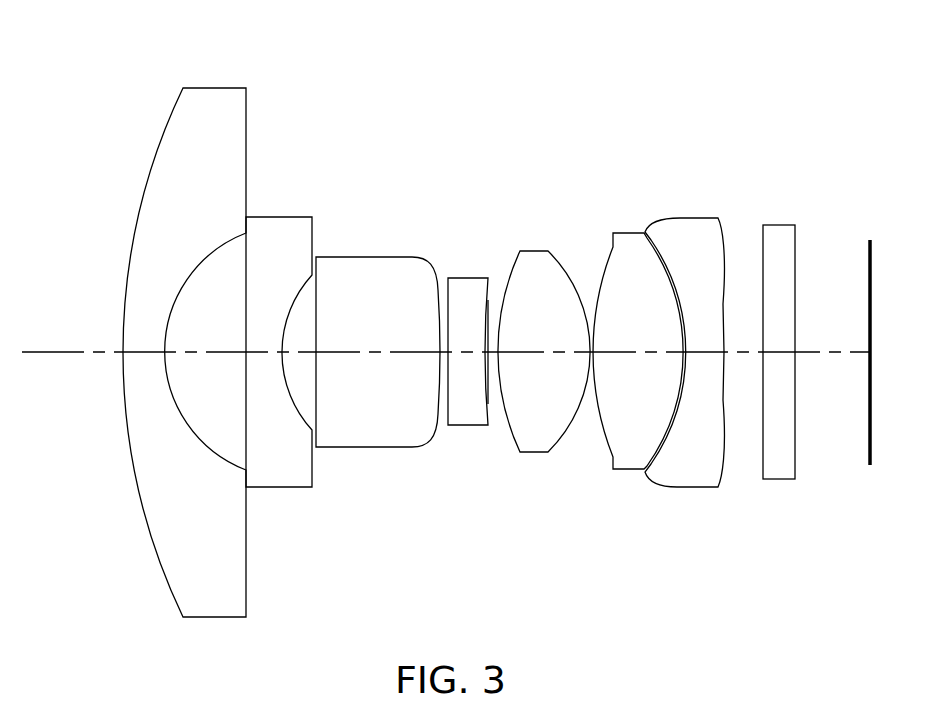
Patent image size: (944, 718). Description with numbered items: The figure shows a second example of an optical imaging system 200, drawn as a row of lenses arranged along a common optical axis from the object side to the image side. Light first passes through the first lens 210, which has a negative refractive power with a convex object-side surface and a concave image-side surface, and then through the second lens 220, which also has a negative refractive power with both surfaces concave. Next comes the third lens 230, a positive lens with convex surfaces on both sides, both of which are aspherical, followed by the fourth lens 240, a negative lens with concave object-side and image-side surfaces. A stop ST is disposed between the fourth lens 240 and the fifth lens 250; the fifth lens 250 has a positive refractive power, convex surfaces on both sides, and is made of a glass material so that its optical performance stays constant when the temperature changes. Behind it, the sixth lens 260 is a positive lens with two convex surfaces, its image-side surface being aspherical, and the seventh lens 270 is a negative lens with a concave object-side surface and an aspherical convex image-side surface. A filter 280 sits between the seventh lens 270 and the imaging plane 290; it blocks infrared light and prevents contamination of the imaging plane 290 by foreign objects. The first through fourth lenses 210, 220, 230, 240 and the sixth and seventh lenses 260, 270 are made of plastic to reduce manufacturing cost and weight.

The optical imaging system 200 is at (514, 118).
The first lens 210 is at (212, 86).
The second lens 220 is at (278, 217).
The third lens 230 is at (367, 257).
The fourth lens 240 is at (468, 278).
The fifth lens 250 is at (533, 251).
The sixth lens 260 is at (628, 233).
The seventh lens 270 is at (697, 218).
The filter 280 is at (778, 225).
The imaging plane 290 is at (868, 445).
The stop ST is at (490, 405).